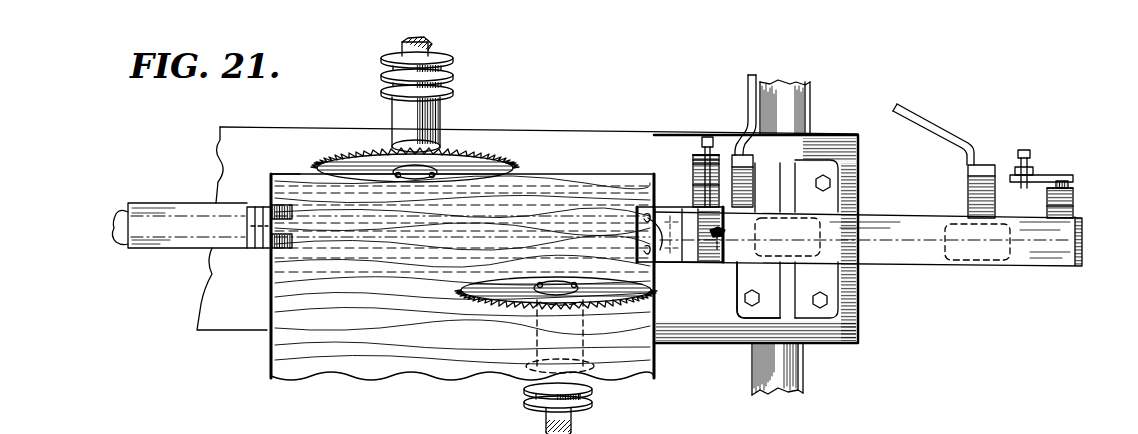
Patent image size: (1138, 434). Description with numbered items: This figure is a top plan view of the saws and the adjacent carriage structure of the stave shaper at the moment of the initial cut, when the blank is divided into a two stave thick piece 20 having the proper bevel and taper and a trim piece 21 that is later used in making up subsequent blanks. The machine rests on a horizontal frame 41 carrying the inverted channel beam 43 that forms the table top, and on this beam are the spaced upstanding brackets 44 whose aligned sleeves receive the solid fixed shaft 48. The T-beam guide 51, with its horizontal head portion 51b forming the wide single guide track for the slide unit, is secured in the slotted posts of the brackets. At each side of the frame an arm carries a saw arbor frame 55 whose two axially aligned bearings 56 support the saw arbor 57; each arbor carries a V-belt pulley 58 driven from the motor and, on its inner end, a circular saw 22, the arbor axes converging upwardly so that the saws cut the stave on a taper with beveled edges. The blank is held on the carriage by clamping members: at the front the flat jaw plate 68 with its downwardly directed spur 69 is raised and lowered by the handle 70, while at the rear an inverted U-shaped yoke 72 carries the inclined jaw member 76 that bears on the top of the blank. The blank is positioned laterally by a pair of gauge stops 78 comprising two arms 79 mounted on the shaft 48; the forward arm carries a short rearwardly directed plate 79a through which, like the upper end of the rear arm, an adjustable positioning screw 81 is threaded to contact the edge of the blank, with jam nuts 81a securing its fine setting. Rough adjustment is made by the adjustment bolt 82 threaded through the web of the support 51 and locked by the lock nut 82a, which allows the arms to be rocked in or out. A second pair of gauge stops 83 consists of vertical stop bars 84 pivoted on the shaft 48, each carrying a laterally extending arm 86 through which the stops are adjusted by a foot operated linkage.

The stave thick piece 20 is at (292, 350).
The trim piece 21 is at (284, 174).
The circular saw 22 is at (455, 152).
The horizontal frame 41 is at (805, 360).
The inverted channel beam 43 is at (862, 308).
The upstanding bracket 44 is at (746, 314).
The fixed shaft 48 is at (120, 212).
The fixed guide and support 51 is at (1083, 244).
The top or head portion of the T-beam 51b is at (196, 204).
The saw arbor frame 55 is at (386, 118).
The bearing 56 is at (441, 122).
The saw arbor 57 is at (434, 48).
The V-belt pulley 58 is at (448, 76).
The flat plate (clamping jaw) 68 is at (690, 262).
The spur 69 is at (659, 262).
The handle 70 is at (723, 262).
The yoke 72 is at (250, 234).
The jaw member 76 is at (270, 206).
The gauge stop 78 is at (692, 152).
The arm 79 is at (693, 201).
The short rearwardly directed plate 79a is at (1045, 175).
The adjustable positioning screw 81 is at (707, 137).
The jam nut 81a is at (693, 162).
The adjustment bolt 82 is at (693, 185).
The lock nut 82a is at (1046, 192).
The gauge stop (second pair) 83 is at (752, 158).
The vertical stop bar 84 is at (753, 182).
The laterally extending arm 86 is at (747, 100).